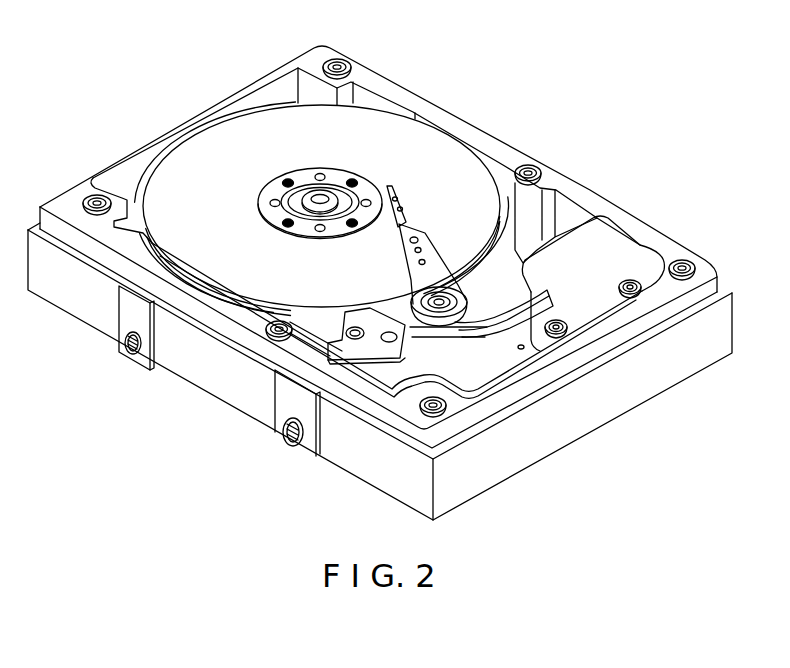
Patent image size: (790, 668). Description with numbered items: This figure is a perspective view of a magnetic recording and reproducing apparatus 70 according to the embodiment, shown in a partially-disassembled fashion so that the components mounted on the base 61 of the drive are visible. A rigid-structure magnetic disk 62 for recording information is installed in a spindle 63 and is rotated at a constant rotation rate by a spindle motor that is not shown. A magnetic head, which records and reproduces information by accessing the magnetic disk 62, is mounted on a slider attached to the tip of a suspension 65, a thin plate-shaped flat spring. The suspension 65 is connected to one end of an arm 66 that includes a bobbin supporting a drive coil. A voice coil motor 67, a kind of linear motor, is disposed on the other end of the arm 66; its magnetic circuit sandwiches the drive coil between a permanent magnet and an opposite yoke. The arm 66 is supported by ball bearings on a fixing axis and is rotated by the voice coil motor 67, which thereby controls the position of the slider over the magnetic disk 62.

The base 61 is at (635, 386).
The magnetic disk 62 is at (378, 135).
The spindle 63 is at (267, 192).
The suspension 65 is at (400, 207).
The arm 66 is at (407, 313).
The voice coil motor 67 is at (460, 325).
The magnetic recording and reproducing apparatus 70 is at (507, 62).